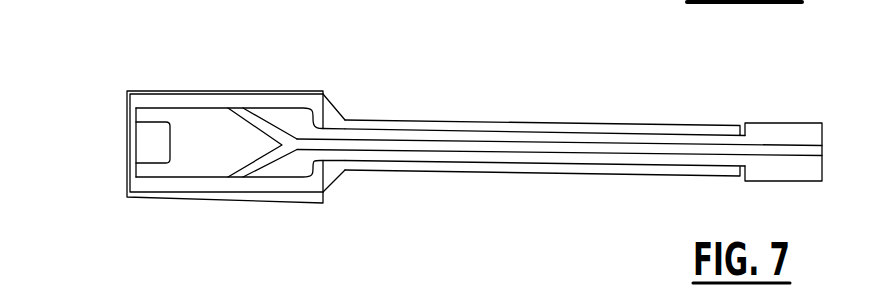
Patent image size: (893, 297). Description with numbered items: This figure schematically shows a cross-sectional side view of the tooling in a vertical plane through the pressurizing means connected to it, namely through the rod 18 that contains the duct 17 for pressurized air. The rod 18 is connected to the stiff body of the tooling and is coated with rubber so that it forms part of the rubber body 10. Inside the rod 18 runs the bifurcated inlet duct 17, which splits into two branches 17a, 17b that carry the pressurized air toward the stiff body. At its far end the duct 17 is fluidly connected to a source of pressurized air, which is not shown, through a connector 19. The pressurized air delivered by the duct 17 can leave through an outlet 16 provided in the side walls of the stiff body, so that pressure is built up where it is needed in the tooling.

The rubber body 10 is at (160, 100).
The outlet 16 is at (238, 107).
The bifurcated inlet duct 17 is at (493, 150).
The inlet duct branch 17a is at (265, 163).
The inlet duct branch 17b is at (262, 120).
The rod 18 is at (623, 140).
The connector 19 is at (780, 133).